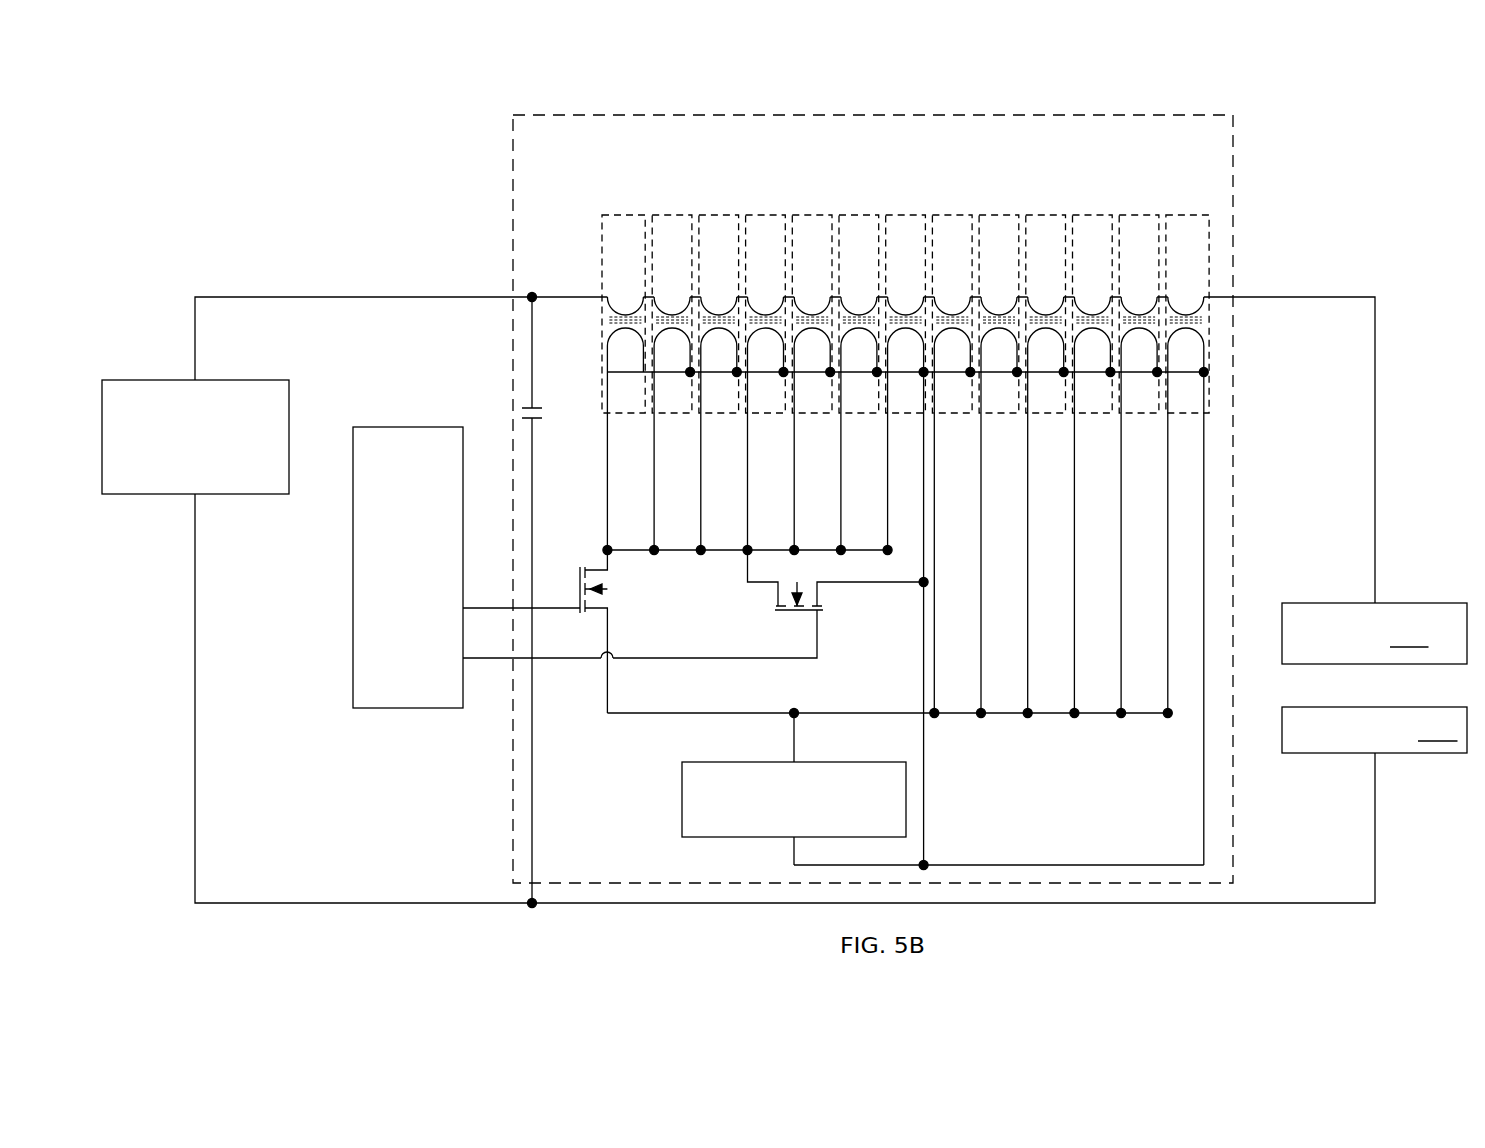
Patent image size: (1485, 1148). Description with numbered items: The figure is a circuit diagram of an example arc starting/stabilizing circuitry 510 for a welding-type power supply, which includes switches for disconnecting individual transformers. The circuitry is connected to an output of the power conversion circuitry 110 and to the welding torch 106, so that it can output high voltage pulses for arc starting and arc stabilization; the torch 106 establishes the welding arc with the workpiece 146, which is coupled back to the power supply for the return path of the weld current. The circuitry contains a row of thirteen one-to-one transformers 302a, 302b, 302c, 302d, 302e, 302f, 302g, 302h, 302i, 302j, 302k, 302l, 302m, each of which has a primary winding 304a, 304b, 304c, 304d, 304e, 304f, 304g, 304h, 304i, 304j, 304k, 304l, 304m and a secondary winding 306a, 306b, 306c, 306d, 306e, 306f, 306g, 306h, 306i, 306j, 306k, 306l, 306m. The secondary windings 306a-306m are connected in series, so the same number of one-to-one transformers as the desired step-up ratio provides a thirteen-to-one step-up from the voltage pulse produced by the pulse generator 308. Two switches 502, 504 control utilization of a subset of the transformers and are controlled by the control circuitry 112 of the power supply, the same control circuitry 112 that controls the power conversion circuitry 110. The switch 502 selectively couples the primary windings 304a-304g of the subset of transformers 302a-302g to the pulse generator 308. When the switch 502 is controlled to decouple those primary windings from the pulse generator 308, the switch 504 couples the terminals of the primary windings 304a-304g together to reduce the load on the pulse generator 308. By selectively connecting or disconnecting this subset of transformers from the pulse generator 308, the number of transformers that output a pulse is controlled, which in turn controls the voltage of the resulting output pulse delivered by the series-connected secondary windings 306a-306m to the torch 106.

The arc starting/stabilizing circuitry 510 is at (268, 80).
The power conversion circuitry 110 is at (180, 379).
The control circuitry 112 is at (353, 565).
The welding torch 106 is at (1374, 633).
The workpiece 146 is at (1374, 730).
The switch 502 is at (598, 568).
The switch 504 is at (775, 600).
The pulse generator 308 is at (682, 763).
The transformer 302a is at (602, 382).
The transformer 302b is at (652, 222).
The transformer 302c is at (718, 415).
The transformer 302d is at (757, 213).
The transformer 302e is at (813, 413).
The transformer 302f is at (868, 215).
The transformer 302g is at (906, 413).
The transformer 302h is at (950, 215).
The transformer 302i is at (1008, 413).
The transformer 302j is at (1055, 215).
The transformer 302k is at (1103, 413).
The transformer 302l is at (1150, 215).
The transformer 302m is at (1205, 376).
The primary winding 304a is at (623, 352).
The primary winding 304b is at (668, 352).
The primary winding 304c is at (716, 352).
The primary winding 304d is at (762, 352).
The primary winding 304e is at (808, 352).
The primary winding 304f is at (856, 352).
The primary winding 304g is at (908, 352).
The primary winding 304h is at (950, 352).
The primary winding 304i is at (997, 352).
The primary winding 304j is at (1045, 352).
The primary winding 304k is at (1092, 352).
The primary winding 304l is at (1139, 352).
The primary winding 304m is at (1186, 352).
The secondary winding 306a is at (615, 283).
The secondary winding 306b is at (670, 258).
The secondary winding 306c is at (717, 250).
The secondary winding 306d is at (763, 260).
The secondary winding 306e is at (812, 288).
The secondary winding 306f is at (862, 288).
The secondary winding 306g is at (907, 288).
The secondary winding 306h is at (945, 288).
The secondary winding 306i is at (1003, 288).
The secondary winding 306j is at (1052, 288).
The secondary winding 306k is at (1087, 288).
The secondary winding 306l is at (1143, 288).
The secondary winding 306m is at (1192, 288).